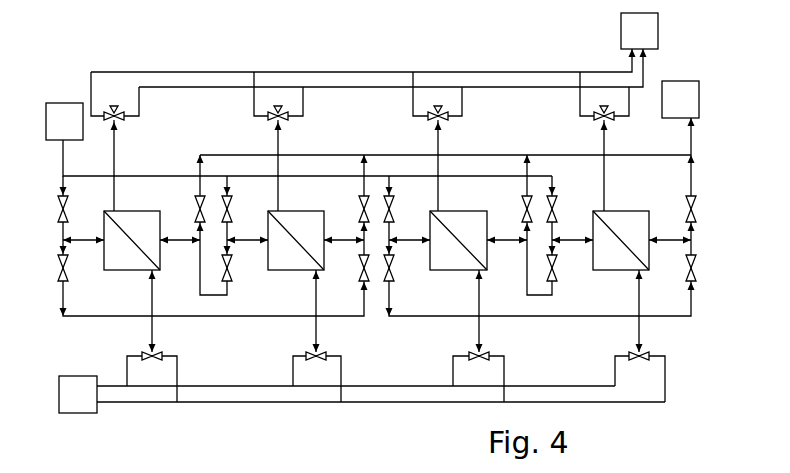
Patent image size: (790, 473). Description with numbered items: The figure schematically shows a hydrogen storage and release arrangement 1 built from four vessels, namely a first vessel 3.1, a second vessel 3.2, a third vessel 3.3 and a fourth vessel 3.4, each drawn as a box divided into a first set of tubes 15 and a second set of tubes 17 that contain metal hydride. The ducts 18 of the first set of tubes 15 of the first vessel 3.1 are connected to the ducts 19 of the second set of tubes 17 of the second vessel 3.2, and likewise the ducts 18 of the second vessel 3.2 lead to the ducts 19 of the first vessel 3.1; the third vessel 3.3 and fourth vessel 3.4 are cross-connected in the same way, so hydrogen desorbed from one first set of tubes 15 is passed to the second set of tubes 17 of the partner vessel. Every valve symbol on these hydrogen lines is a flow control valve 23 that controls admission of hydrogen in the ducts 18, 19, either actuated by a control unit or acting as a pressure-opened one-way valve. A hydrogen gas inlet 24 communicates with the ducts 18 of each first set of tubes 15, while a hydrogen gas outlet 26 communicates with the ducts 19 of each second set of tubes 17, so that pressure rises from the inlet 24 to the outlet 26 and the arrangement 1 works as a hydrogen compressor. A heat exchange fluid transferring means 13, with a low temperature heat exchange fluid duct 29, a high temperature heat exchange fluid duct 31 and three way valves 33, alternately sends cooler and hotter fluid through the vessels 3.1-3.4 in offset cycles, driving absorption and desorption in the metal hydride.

The hydrogen storage and release arrangement 1 is at (191, 30).
The first vessel 3.1 is at (151, 212).
The second vessel 3.2 is at (315, 212).
The third vessel 3.3 is at (477, 212).
The fourth vessel 3.4 is at (640, 212).
The heat exchange fluid transferring means 13 is at (628, 42).
The first set of tubes 15 is at (129, 266).
The second set of tubes 17 is at (156, 235).
The ducts 18 is at (88, 232).
The ducts 19 is at (182, 232).
The flow control valve 23 is at (60, 262).
The hydrogen gas inlet 24 is at (53, 132).
The hydrogen gas outlet 26 is at (669, 110).
The low temperature heat exchange fluid duct 29 is at (245, 386).
The high temperature heat exchange fluid duct 31 is at (245, 402).
The three way valve 33 is at (118, 120).